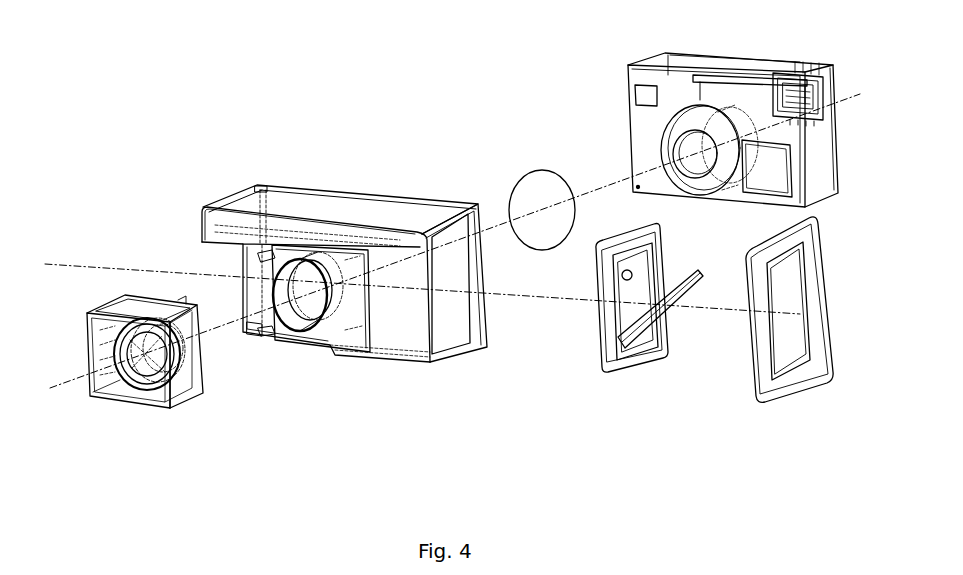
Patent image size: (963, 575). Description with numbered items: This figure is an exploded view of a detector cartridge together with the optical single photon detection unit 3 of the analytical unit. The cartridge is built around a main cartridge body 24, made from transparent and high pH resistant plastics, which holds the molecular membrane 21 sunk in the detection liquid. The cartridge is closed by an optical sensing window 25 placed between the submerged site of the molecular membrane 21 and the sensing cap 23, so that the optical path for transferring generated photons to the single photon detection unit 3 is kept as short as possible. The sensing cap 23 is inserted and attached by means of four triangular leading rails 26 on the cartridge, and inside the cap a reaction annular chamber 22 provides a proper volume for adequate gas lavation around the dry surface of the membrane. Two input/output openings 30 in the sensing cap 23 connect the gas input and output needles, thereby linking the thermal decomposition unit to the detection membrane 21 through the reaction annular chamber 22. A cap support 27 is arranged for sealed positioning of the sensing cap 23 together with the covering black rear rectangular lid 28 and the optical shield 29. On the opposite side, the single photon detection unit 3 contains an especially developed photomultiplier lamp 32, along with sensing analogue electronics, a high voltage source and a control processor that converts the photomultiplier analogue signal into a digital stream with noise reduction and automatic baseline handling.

The optical single photon detection unit 3 is at (753, 70).
The molecular membrane 21 is at (537, 197).
The reaction annular chamber 22 is at (182, 303).
The sensing cap 23 is at (92, 400).
The main cartridge body 24 is at (410, 337).
The optical sensing window 25 is at (367, 280).
The triangular leading rails 26 is at (262, 188).
The cap support 27 is at (250, 337).
The black rear rectangular lid 28 is at (608, 373).
The optical shield 29 is at (805, 378).
The input/output openings 30 is at (95, 305).
The photomultiplier lamp 32 is at (688, 135).